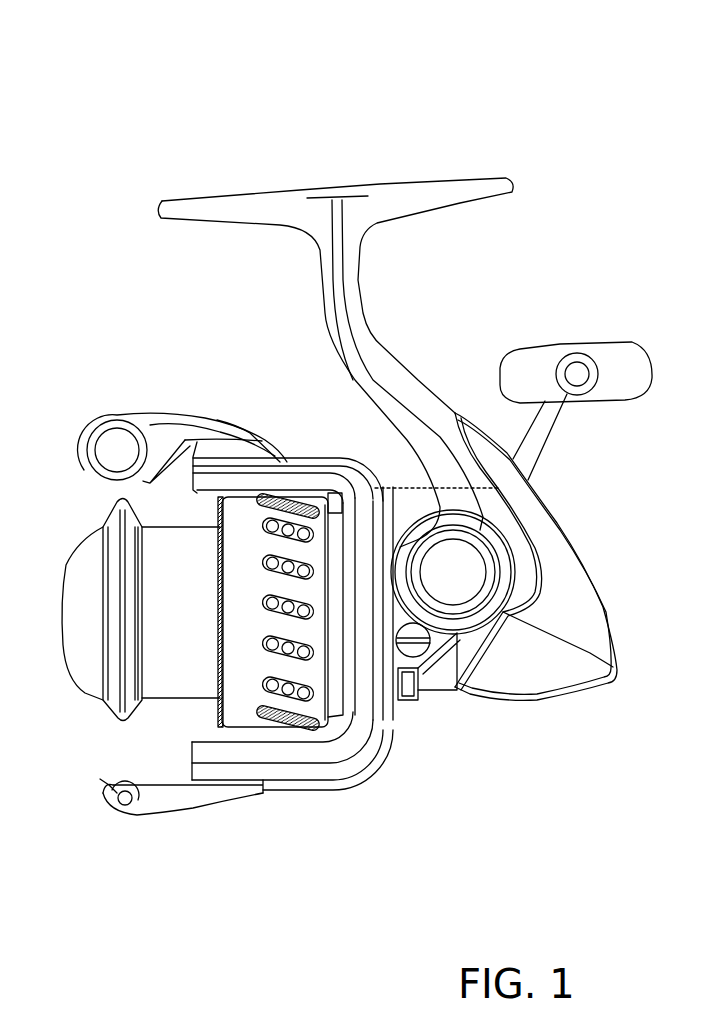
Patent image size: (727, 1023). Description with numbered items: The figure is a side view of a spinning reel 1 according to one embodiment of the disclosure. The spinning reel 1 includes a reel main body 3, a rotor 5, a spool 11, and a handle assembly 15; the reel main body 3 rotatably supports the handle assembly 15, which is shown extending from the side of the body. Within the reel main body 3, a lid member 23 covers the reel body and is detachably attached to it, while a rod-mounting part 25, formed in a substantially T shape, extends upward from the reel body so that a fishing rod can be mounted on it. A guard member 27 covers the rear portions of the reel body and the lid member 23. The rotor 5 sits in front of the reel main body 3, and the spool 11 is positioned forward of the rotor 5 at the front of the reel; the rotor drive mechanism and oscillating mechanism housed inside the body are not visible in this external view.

The spinning reel 1 is at (549, 112).
The reel main body 3 is at (578, 710).
The rotor 5 is at (208, 393).
The spool 11 is at (162, 712).
The handle assembly 15 is at (558, 441).
The lid member 23 is at (442, 678).
The rod-mounting part 25 is at (440, 195).
The guard member 27 is at (570, 607).